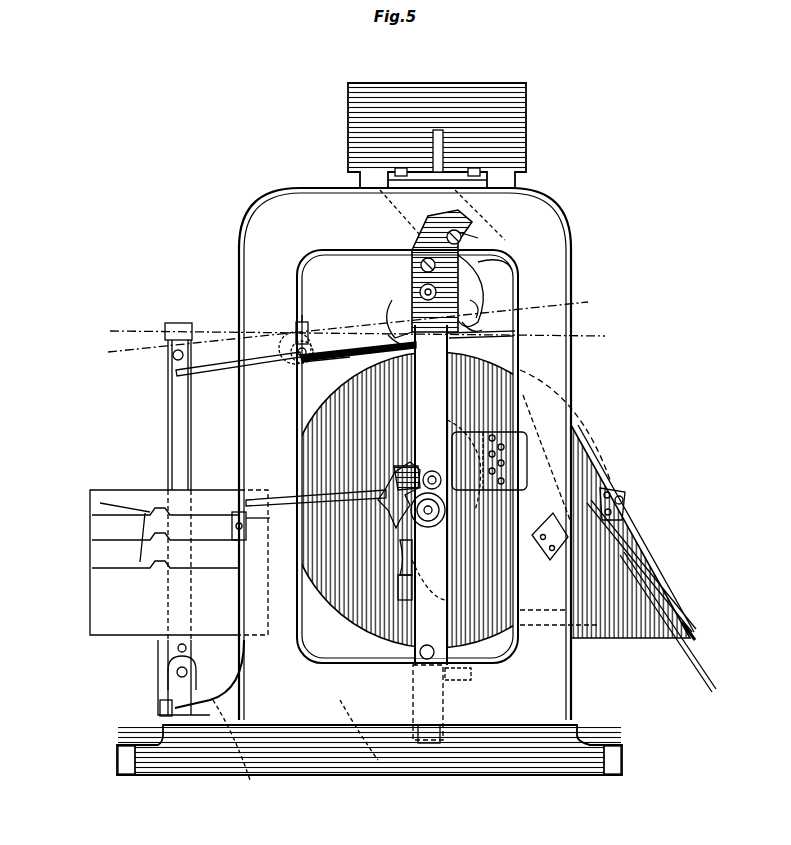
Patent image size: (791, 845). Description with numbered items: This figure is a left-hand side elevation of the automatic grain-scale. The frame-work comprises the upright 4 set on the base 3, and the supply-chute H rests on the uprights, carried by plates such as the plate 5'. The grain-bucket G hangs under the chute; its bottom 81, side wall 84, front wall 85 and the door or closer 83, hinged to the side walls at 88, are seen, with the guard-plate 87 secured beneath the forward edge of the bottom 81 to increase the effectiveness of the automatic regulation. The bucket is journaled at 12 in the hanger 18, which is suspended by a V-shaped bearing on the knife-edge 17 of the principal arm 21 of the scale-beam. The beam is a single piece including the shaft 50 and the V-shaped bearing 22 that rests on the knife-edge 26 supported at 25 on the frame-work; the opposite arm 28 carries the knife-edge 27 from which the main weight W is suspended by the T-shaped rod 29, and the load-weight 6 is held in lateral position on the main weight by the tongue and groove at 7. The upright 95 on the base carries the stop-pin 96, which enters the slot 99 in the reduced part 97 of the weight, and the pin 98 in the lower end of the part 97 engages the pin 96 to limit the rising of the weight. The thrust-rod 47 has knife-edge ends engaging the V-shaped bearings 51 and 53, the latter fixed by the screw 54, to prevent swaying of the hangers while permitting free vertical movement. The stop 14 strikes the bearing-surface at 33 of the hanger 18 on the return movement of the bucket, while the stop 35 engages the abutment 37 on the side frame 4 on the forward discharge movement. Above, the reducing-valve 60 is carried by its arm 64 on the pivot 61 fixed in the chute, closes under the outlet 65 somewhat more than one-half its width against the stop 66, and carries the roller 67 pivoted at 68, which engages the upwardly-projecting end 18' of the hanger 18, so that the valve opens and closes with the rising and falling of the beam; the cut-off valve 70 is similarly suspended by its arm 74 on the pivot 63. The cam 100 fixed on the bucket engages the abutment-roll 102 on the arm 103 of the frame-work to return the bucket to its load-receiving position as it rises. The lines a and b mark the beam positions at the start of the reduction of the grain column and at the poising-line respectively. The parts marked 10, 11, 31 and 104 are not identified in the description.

The supply-chute H is at (438, 108).
The plate 5' is at (469, 154).
The upright 4 is at (558, 368).
The stop 14 is at (403, 585).
The hanger 18 is at (435, 490).
The knife-edge 17 is at (440, 336).
The reducing-valve 60 is at (480, 332).
The pivot 61 is at (420, 266).
The pivot 63 is at (420, 290).
The arm 64 is at (486, 283).
The outlet 65 is at (470, 322).
The stop 66 is at (482, 305).
The roller 67 is at (468, 220).
The roller pivot 68 is at (484, 236).
The cut-off valve 70 is at (392, 328).
The arm 74 is at (412, 310).
The upwardly-projecting end of hanger 18' is at (477, 291).
The line a a is at (352, 328).
The poising-line b b is at (358, 334).
The support 25 is at (303, 365).
The principal arm 21 is at (326, 369).
The knife-edge 26 is at (296, 360).
The shaft 50 is at (289, 350).
The V-shaped bearing 22 is at (306, 330).
The T-shaped rod 29 is at (180, 435).
The knife-edge 27 is at (174, 359).
The arm 28 is at (224, 365).
The main weight W is at (100, 556).
The load-weight 6 is at (100, 560).
The tongue and groove 7 is at (140, 562).
The V-shaped bearing 53 is at (236, 533).
The screw 54 is at (236, 520).
The thrust-rod 47 is at (316, 493).
The upright 95 is at (196, 672).
The stop-pin 96 is at (178, 676).
The reduced part 97 is at (196, 652).
The pin 98 is at (168, 705).
The slot 99 is at (190, 683).
The base 3 is at (385, 750).
The rod 10 is at (413, 690).
The block 31 is at (456, 680).
The roller 11 is at (420, 652).
The bucket-bearing 12 is at (428, 518).
The pivot 104 is at (420, 455).
The cam 100 is at (404, 478).
The abutment-roll 102 is at (435, 478).
The arm or abutment 103 is at (484, 445).
The V-shaped bearing 51 is at (385, 553).
The abutment 33 is at (405, 592).
The grain-bucket G is at (356, 575).
The abutment 37 is at (528, 615).
The bottom 81 is at (610, 645).
The side wall 84 is at (578, 465).
The front wall 85 is at (612, 572).
The hinge 88 is at (624, 500).
The stop 35 is at (566, 514).
The door or closer 83 is at (690, 632).
The guard-plate 87 is at (702, 672).